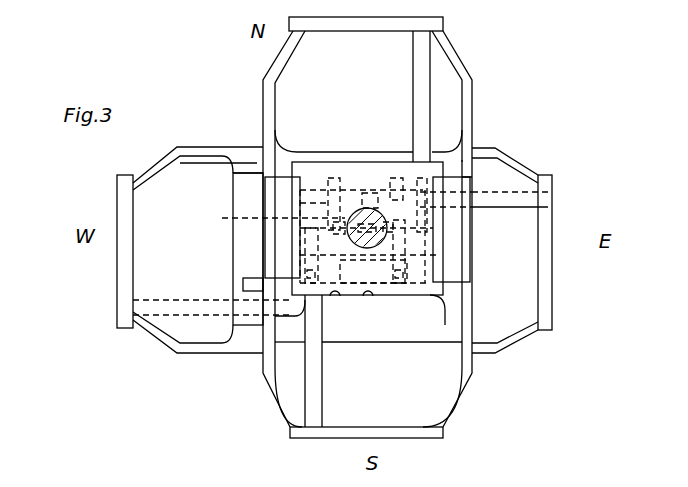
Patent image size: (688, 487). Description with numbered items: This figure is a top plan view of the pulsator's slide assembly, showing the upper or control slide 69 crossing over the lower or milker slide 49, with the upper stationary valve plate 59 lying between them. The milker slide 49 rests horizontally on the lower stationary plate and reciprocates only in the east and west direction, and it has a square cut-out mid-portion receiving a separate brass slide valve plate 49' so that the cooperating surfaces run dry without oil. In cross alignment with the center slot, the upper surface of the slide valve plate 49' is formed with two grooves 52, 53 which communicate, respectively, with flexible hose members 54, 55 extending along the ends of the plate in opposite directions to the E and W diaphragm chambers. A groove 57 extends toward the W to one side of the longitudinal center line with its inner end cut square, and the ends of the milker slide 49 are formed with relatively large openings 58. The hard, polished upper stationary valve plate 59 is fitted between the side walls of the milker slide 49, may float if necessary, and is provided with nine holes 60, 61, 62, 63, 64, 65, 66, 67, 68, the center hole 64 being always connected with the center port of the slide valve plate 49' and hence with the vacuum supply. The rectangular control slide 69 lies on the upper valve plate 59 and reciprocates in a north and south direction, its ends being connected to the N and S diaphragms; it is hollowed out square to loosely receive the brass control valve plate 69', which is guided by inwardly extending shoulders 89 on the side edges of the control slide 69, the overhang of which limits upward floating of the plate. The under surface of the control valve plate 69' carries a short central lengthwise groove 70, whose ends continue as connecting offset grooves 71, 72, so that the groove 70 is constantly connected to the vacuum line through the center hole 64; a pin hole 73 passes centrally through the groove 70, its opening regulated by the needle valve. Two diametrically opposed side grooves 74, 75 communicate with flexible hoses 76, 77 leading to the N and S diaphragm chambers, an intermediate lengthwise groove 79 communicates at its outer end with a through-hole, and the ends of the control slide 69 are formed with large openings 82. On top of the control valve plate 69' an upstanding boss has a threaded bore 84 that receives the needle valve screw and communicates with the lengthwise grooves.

The lower or milker slide 49 is at (566, 252).
The slide valve plate 49' is at (229, 249).
The groove 52 is at (319, 178).
The groove 53 is at (340, 312).
The flexible hose member 54 is at (500, 207).
The flexible hose member 55 is at (190, 307).
The groove 57 is at (243, 284).
The opening 58 is at (327, 250).
The upper stationary valve plate 59 is at (402, 338).
The hole 60 is at (374, 192).
The hole 61 is at (434, 194).
The hole 62 is at (270, 223).
The hole 63 is at (446, 214).
The center hole 64 is at (451, 229).
The hole 65 is at (373, 274).
The hole 66 is at (400, 298).
The hole 67 is at (335, 300).
The hole 68 is at (368, 300).
The control slide 69 is at (381, 227).
The control valve plate 69' is at (476, 96).
The groove 70 is at (462, 256).
The offset groove 71 is at (403, 178).
The offset groove 72 is at (377, 300).
The pin hole 73 is at (375, 178).
The side groove 74 is at (476, 192).
The side groove 75 is at (282, 227).
The flexible hose 76 is at (428, 79).
The flexible hose 77 is at (308, 387).
The lengthwise groove 79 is at (334, 178).
The opening 82 is at (368, 231).
The threaded bore 84 is at (447, 241).
The shoulder 89 is at (257, 173).